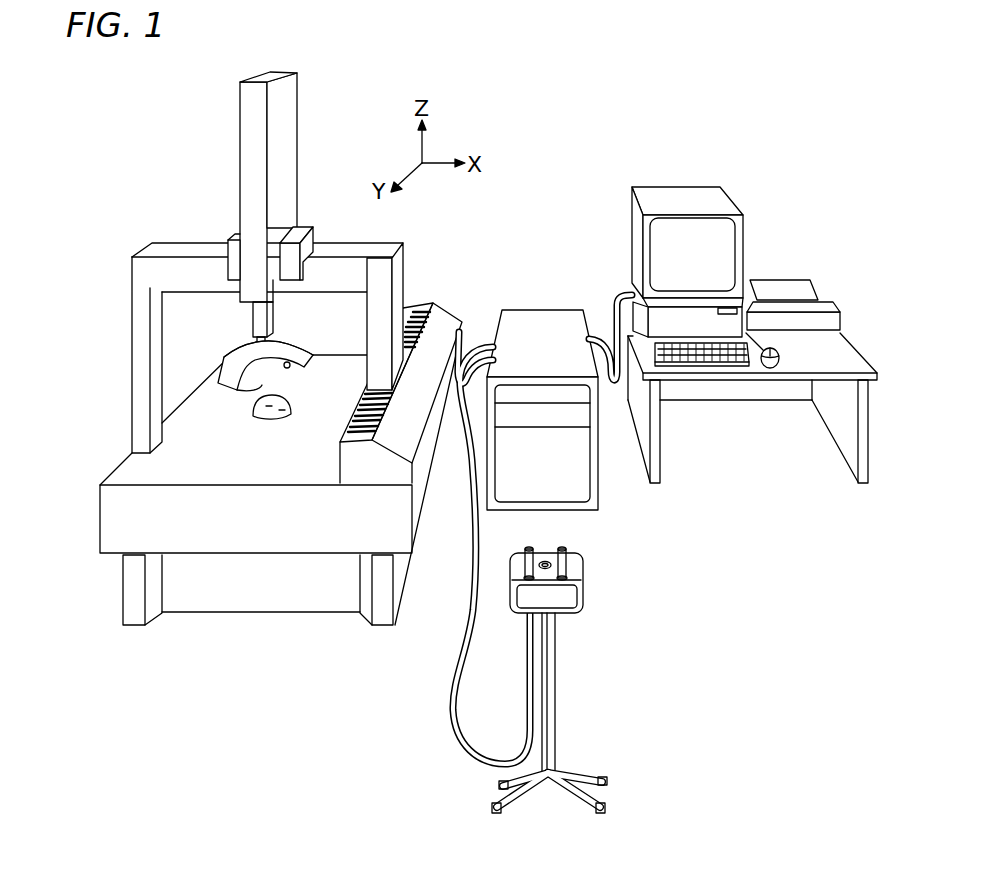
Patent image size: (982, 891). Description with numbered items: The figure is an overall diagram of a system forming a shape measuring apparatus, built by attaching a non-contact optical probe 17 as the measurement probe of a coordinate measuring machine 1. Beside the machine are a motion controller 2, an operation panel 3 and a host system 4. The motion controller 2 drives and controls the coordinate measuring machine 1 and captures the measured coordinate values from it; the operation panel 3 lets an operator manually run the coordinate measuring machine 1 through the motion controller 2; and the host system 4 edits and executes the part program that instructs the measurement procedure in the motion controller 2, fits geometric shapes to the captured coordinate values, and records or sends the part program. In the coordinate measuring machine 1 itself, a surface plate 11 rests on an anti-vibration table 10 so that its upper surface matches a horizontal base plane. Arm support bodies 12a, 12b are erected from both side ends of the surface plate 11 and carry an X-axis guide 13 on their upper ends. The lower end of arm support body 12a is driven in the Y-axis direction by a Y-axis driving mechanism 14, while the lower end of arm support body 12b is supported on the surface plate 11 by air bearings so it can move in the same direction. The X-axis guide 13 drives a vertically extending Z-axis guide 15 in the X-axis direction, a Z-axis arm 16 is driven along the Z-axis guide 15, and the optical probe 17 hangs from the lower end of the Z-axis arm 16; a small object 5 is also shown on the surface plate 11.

The coordinate measuring machine 1 is at (324, 108).
The motion controller 2 is at (536, 322).
The operation panel 3 is at (608, 598).
The host system 4 is at (780, 199).
The reference sphere 5 is at (286, 413).
The anti-vibration table 10 is at (130, 597).
The surface plate 11 is at (110, 520).
The arm support body 12a is at (398, 277).
The arm support body 12b is at (138, 365).
The X-axis guide 13 is at (178, 247).
The Y-axis driving mechanism 14 is at (438, 321).
The Z-axis guide 15 is at (247, 144).
The Z-axis arm 16 is at (270, 312).
The optical probe 17 is at (224, 361).